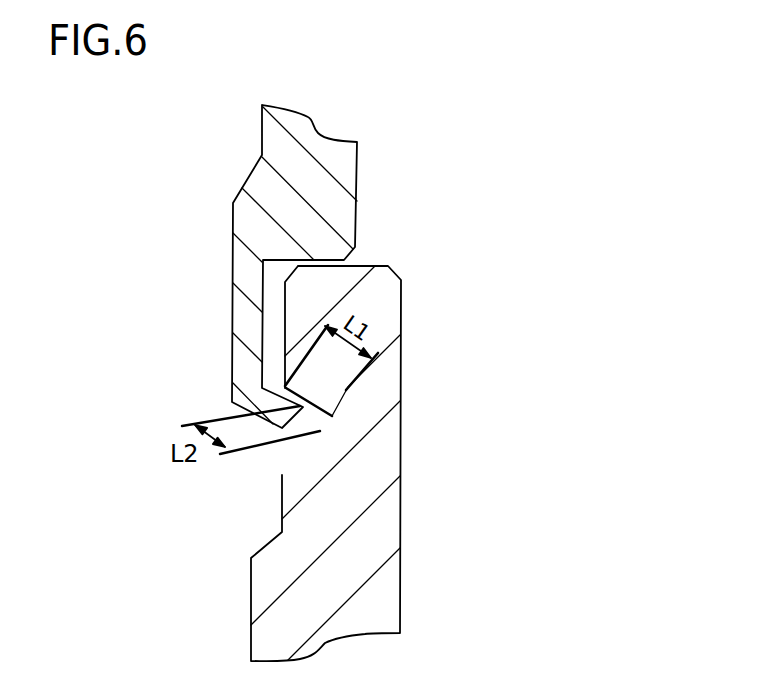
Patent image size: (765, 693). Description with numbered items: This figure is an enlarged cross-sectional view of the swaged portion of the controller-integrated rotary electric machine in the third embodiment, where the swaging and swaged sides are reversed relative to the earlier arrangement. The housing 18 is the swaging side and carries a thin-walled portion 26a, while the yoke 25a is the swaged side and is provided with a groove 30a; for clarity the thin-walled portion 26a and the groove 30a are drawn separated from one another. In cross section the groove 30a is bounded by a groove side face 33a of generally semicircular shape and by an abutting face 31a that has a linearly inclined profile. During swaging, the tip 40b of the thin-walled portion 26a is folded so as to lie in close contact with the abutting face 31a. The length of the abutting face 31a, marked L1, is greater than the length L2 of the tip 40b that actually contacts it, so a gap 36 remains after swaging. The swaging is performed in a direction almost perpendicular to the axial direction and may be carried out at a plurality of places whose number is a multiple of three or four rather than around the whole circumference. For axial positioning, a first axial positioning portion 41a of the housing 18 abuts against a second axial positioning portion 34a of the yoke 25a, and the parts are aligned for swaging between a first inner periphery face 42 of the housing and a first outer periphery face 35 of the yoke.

The housing 18 is at (262, 155).
The yoke 25a is at (400, 570).
The thin-walled portion 26a is at (233, 332).
The groove 30a is at (245, 449).
The abutting face 31a is at (379, 356).
The groove side face 33a is at (320, 435).
The second axial positioning portion 34a is at (345, 266).
The first outer periphery face 35 is at (285, 297).
The gap 36 is at (318, 440).
The tip 40b is at (332, 416).
The first axial positioning portion 41a is at (307, 260).
The first inner periphery face 42 is at (263, 324).